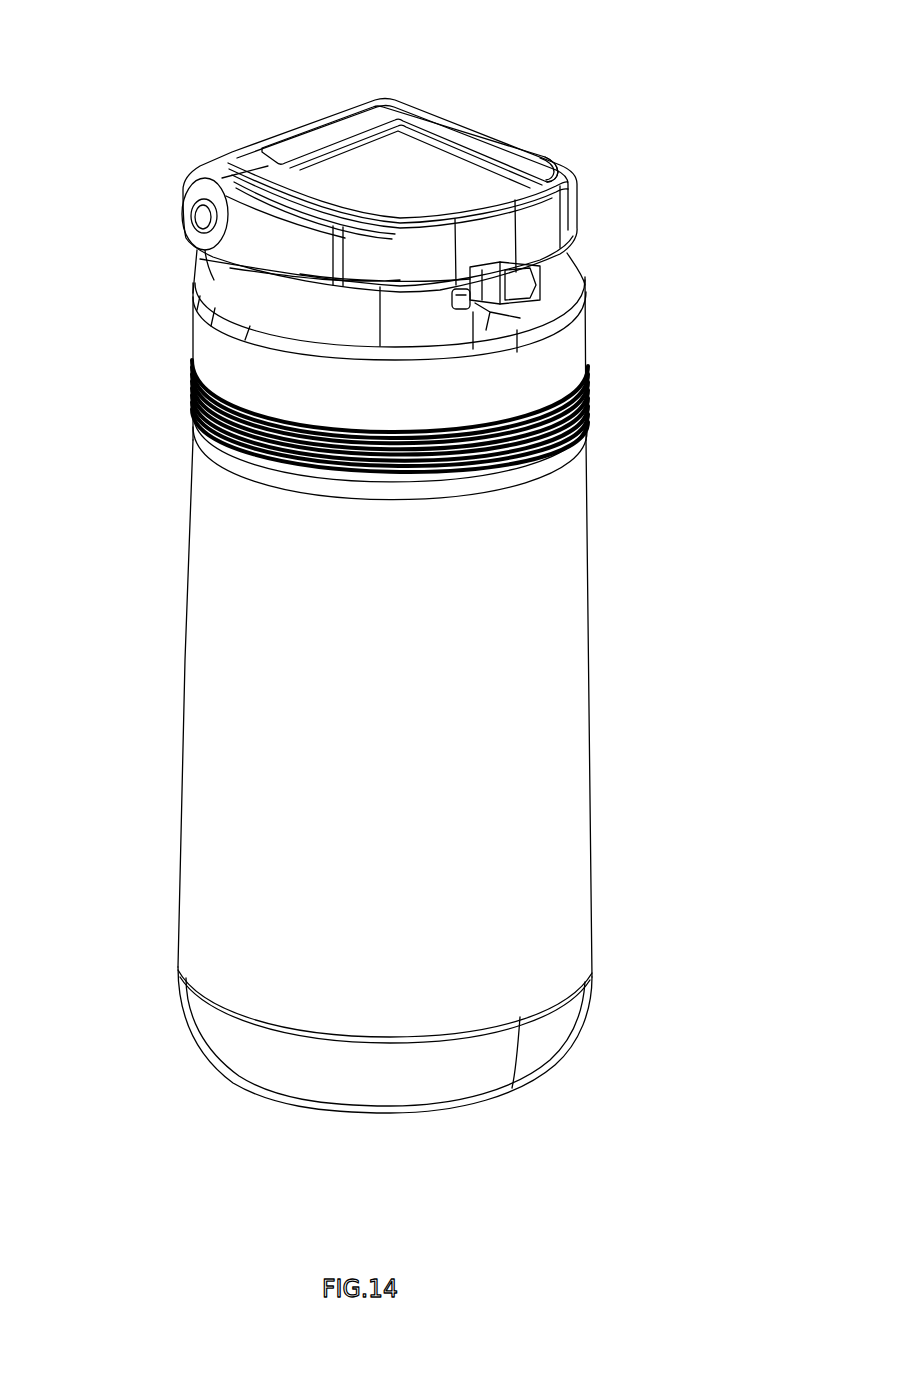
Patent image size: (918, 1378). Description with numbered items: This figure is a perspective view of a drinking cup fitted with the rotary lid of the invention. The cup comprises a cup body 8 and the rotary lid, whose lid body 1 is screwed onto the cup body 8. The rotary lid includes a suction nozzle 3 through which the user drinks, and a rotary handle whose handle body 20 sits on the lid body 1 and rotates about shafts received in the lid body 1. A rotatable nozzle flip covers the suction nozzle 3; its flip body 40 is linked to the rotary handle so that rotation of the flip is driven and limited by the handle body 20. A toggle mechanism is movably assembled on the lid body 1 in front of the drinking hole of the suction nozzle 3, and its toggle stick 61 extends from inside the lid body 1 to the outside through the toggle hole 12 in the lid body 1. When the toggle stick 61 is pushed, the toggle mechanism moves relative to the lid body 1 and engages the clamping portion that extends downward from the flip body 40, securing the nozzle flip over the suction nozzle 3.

The suction nozzle 3 is at (305, 142).
The flip body 40 is at (415, 148).
The handle body 20 is at (557, 170).
The toggle stick 61 is at (563, 247).
The lid body 1 is at (209, 349).
The toggle hole 12 is at (517, 312).
The cup body 8 is at (205, 770).